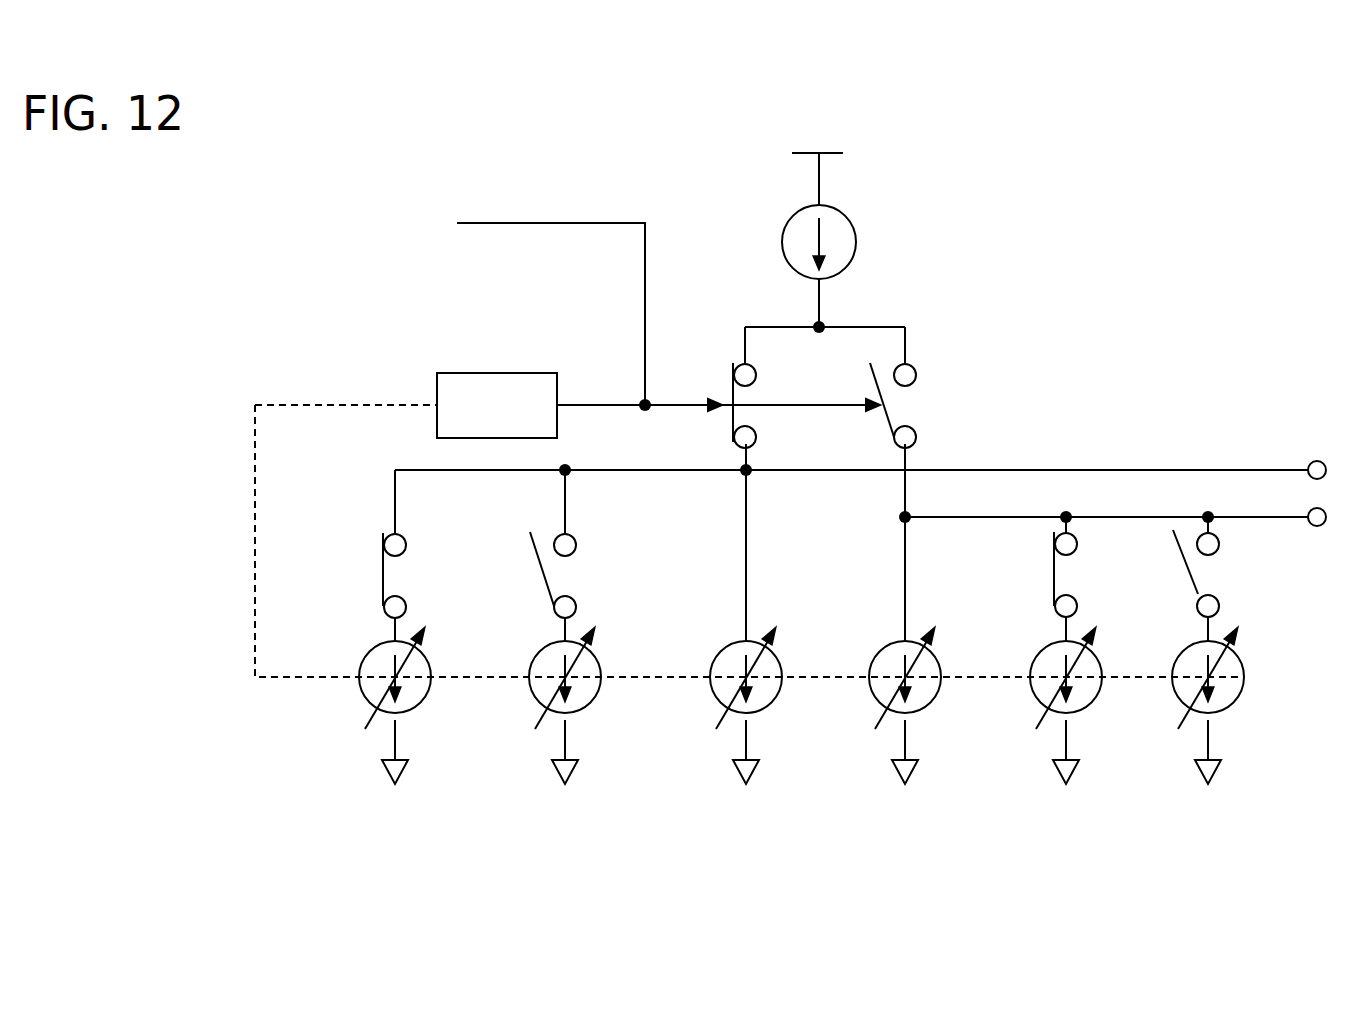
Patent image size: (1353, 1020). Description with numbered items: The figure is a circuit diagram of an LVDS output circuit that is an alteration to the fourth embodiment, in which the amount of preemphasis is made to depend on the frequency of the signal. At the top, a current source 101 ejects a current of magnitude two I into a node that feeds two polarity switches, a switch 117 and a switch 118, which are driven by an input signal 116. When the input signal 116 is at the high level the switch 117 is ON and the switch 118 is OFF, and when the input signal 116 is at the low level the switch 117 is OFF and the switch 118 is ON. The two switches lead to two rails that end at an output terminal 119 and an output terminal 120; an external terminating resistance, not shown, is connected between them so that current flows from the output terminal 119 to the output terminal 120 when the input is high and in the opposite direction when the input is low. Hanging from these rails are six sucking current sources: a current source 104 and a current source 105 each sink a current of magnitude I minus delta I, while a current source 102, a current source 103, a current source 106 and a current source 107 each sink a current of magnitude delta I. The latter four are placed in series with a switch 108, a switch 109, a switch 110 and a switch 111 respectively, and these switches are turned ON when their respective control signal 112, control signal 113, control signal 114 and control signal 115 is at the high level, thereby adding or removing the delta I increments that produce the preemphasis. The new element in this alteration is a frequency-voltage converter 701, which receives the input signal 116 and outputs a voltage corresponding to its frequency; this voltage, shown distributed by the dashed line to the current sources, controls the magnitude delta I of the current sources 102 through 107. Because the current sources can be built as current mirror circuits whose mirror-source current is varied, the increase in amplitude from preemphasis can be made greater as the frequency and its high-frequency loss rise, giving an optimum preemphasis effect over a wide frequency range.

The current source 101 is at (856, 242).
The current source 102 is at (428, 662).
The current source 103 is at (598, 662).
The current source 104 is at (779, 662).
The current source 105 is at (938, 662).
The current source 106 is at (1099, 662).
The current source 107 is at (1241, 662).
The switch 108 is at (406, 545).
The switch 109 is at (576, 545).
The switch 110 is at (1077, 548).
The switch 111 is at (1219, 548).
The control signal 112 is at (372, 577).
The control signal 113 is at (530, 577).
The control signal 114 is at (1042, 573).
The control signal 115 is at (1172, 573).
The input signal 116 is at (526, 306).
The switch 117 is at (756, 375).
The switch 118 is at (916, 375).
The output terminal 119 is at (1317, 460).
The output terminal 120 is at (1317, 527).
The frequency-voltage converter 701 is at (497, 405).